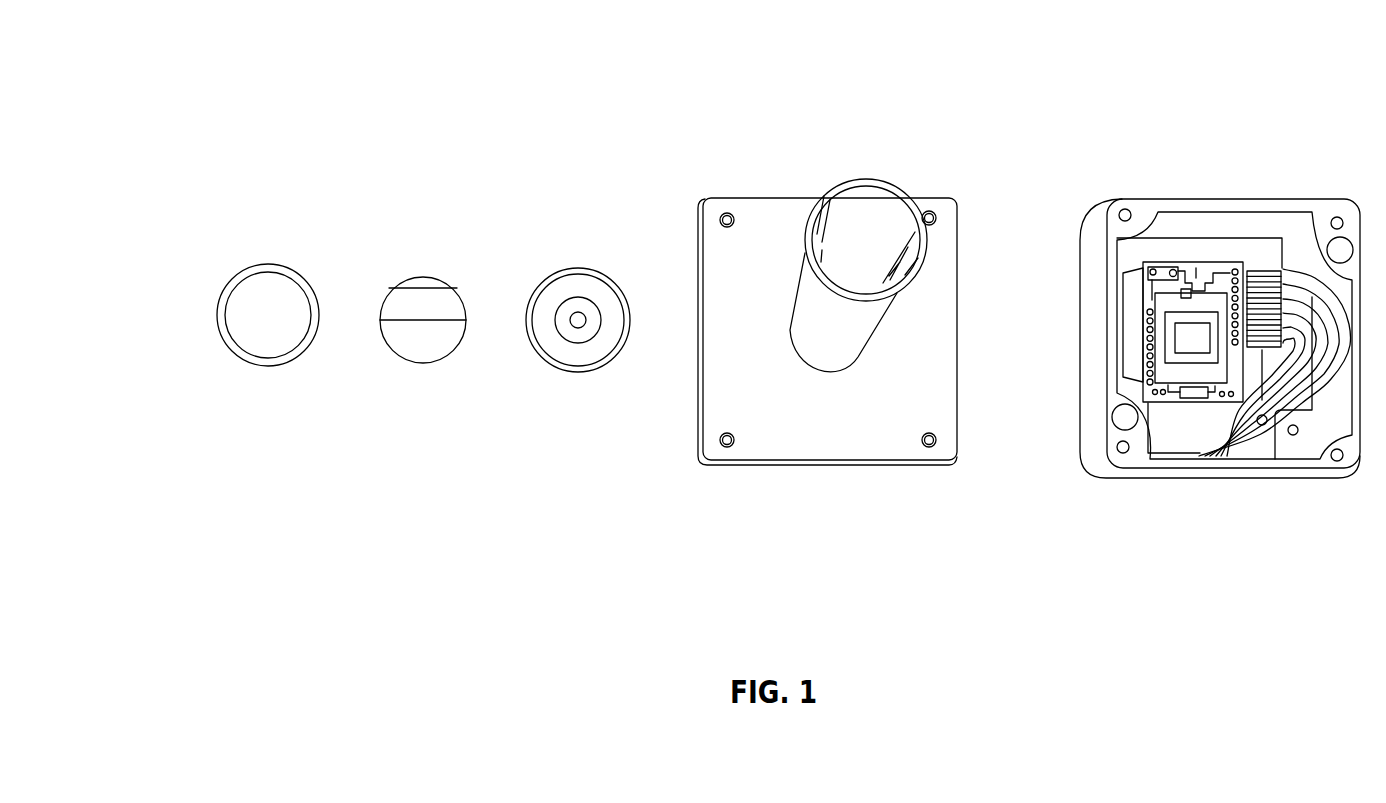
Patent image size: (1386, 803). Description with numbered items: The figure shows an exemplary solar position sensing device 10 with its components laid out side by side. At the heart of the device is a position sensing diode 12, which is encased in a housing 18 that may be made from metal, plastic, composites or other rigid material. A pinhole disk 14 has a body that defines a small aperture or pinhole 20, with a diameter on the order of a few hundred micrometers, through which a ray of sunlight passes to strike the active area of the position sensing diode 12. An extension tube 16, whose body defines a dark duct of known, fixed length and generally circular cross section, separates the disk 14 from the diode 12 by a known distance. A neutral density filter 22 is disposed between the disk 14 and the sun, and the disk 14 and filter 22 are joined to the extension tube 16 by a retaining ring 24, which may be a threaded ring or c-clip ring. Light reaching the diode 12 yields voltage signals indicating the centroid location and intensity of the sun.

The solar position sensing device 10 is at (358, 445).
The position sensing diode 12 is at (1175, 357).
The pinhole disk 14 is at (573, 310).
The extension tube 16 is at (867, 178).
The housing 18 is at (1204, 316).
The pinhole 20 is at (582, 329).
The neutral density filter 22 is at (423, 273).
The retaining ring 24 is at (267, 265).